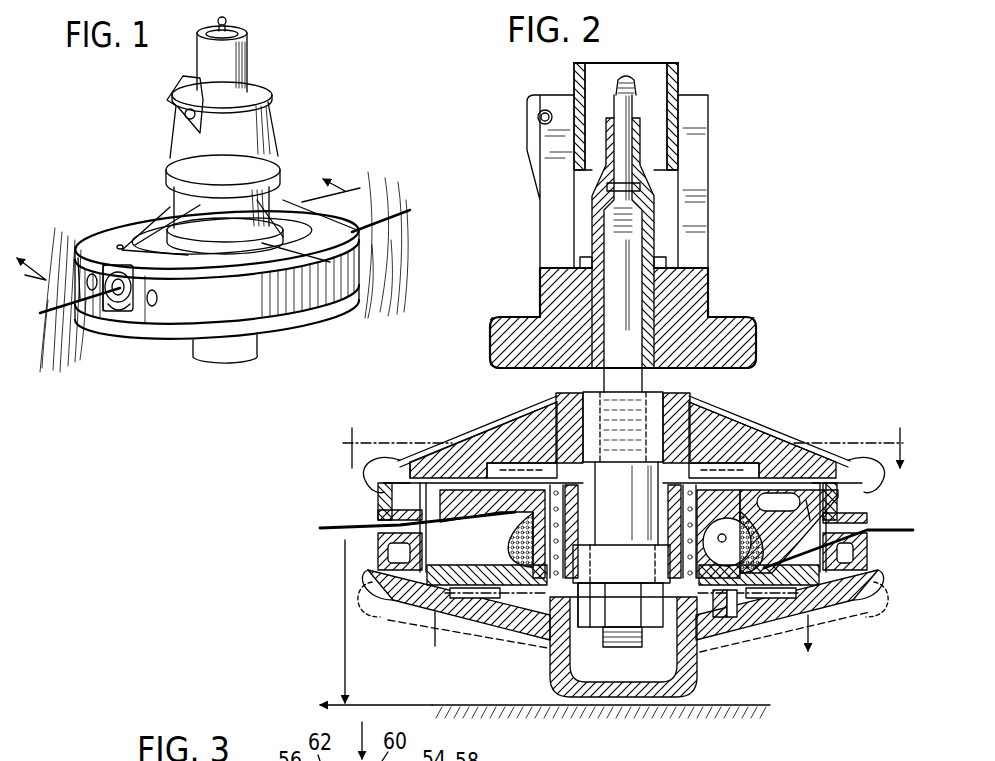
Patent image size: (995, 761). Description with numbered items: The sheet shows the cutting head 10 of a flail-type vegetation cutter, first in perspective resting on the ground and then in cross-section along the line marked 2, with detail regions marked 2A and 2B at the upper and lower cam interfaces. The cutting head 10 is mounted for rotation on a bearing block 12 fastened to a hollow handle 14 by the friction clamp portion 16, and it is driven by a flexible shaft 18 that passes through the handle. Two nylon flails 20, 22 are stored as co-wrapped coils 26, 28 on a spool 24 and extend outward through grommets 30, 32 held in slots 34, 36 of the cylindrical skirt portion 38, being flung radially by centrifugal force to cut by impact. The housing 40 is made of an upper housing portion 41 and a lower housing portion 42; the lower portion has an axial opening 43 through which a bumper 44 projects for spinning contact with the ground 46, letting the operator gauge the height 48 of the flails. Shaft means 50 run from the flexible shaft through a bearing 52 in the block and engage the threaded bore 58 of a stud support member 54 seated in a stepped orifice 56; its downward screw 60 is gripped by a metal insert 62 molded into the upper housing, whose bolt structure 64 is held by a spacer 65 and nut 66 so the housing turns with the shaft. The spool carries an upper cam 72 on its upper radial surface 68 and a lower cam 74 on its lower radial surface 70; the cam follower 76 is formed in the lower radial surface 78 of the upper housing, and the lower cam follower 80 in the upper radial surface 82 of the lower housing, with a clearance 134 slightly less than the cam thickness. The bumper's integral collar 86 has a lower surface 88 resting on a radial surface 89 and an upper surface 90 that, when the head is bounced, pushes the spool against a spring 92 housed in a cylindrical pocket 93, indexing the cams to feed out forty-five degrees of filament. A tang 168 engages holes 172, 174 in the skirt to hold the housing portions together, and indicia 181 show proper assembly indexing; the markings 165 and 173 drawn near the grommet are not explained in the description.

In FIG. 1, the cutting head 10 is at (341, 112).
In FIG. 2, the cutting head 10 is at (859, 252).
In FIG. 1, the bearing block 12 is at (270, 163).
In FIG. 2, the bearing block 12 is at (712, 290).
In FIG. 1, the hollow handle 14 is at (249, 45).
In FIG. 2, the hollow handle 14 is at (680, 75).
In FIG. 1, the friction clamp portion 16 is at (176, 93).
In FIG. 2, the friction clamp portion 16 is at (527, 126).
In FIG. 1, the flexible shaft 18 is at (231, 26).
In FIG. 2, the flexible shaft 18 is at (631, 78).
In FIG. 1, the flail 20 is at (44, 306).
In FIG. 2, the flail 20 is at (326, 527).
In FIG. 1, the flail 22 is at (405, 205).
In FIG. 2, the flail 22 is at (896, 530).
In FIG. 2, the spool 24 is at (802, 497).
In FIG. 2, the coil 26 is at (760, 503).
In FIG. 2, the coil 28 is at (736, 608).
In FIG. 1, the grommet 30 is at (117, 306).
In FIG. 2, the grommet 30 is at (378, 552).
In FIG. 2, the grommet 32 is at (868, 552).
In FIG. 2, the slot 34 is at (399, 500).
In FIG. 2, the slot 36 is at (838, 610).
In FIG. 2, the cylindrical skirt portion 38 is at (378, 506).
In FIG. 1, the housing 40 is at (123, 210).
In FIG. 2, the housing 40 is at (489, 438).
In FIG. 1, the upper housing portion 41 is at (113, 226).
In FIG. 2, the upper housing portion 41 is at (440, 470).
In FIG. 1, the lower housing portion 42 is at (306, 322).
In FIG. 2, the lower housing portion 42 is at (420, 602).
In FIG. 2, the axial opening 43 is at (553, 630).
In FIG. 1, the bumper 44 is at (226, 348).
In FIG. 2, the bumper 44 is at (641, 702).
In FIG. 2, the ground 46 is at (505, 704).
In FIG. 2, the height 48 is at (376, 622).
In FIG. 2, the shaft means 50 is at (651, 165).
In FIG. 2, the bearing 52 is at (658, 292).
In FIG. 2, the stud support member 54 is at (672, 398).
In FIG. 2, the stepped orifice 56 is at (506, 458).
In FIG. 2, the threaded bore 58 is at (706, 410).
In FIG. 2, the screw 60 is at (625, 418).
In FIG. 2, the metal insert 62 is at (576, 404).
In FIG. 2, the bolt structure 64 is at (608, 646).
In FIG. 2, the spacer 65 is at (634, 578).
In FIG. 2, the nut 66 is at (590, 617).
In FIG. 2, the upper radial surface 68 is at (786, 498).
In FIG. 2, the lower radial surface 70 is at (778, 628).
In FIG. 2, the upper cam 72 is at (738, 505).
In FIG. 2, the lower cam 74 is at (733, 630).
In FIG. 2, the cam follower 76 is at (495, 395).
In FIG. 2, the lower radial surface 78 is at (413, 460).
In FIG. 2, the lower cam follower 80 is at (487, 598).
In FIG. 2, the upper radial surface 82 is at (437, 578).
In FIG. 2, the collar 86 is at (665, 618).
In FIG. 2, the lower surface 88 is at (712, 620).
In FIG. 2, the radial surface 89 is at (530, 612).
In FIG. 2, the upper surface 90 is at (688, 598).
In FIG. 2, the spring 92 is at (515, 540).
In FIG. 2, the cylindrical pocket 93 is at (764, 522).
In FIG. 2, the clearance 134 is at (732, 462).
In FIG. 1, the hole 165 is at (158, 299).
In FIG. 1, the tang 168 is at (151, 307).
In FIG. 1, the hole 172 is at (80, 238).
In FIG. 1, the eyelet lip 173 is at (126, 320).
In FIG. 1, the hole 174 is at (55, 248).
In FIG. 1, the indicia 181 is at (122, 245).
In FIG. 1, the section line 2- 2 is at (181, 218).
In FIG. 2, the section line 2A is at (621, 463).
In FIG. 2, the section line 2B is at (629, 642).